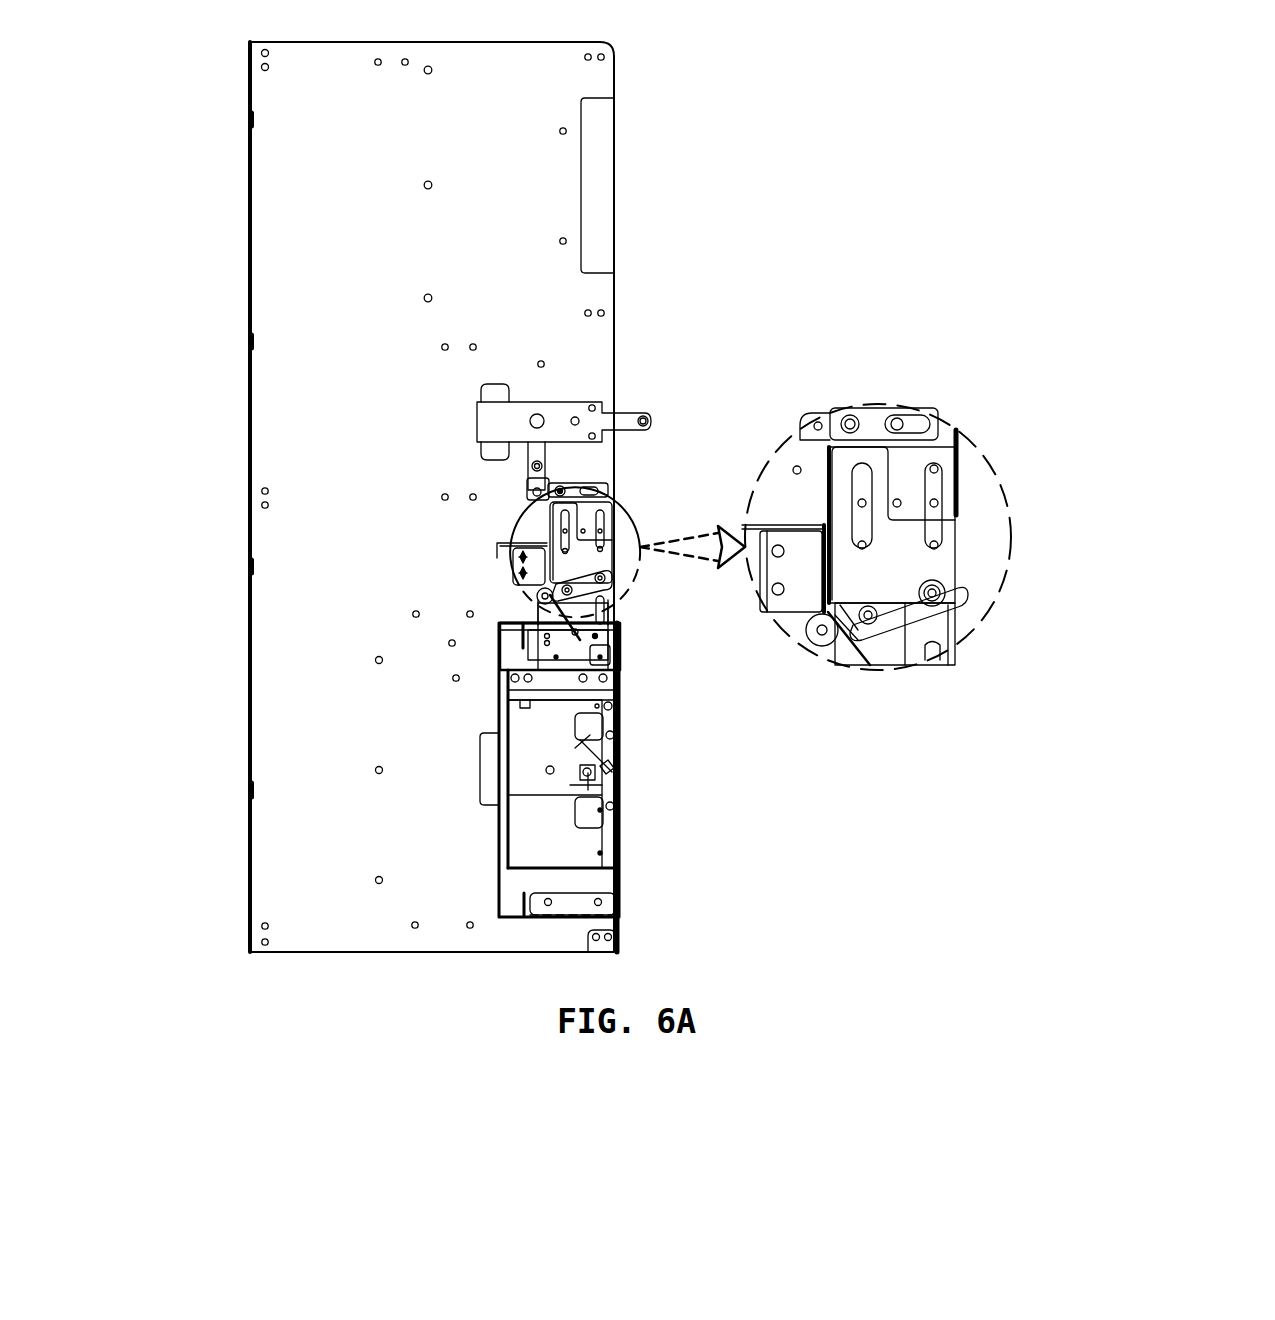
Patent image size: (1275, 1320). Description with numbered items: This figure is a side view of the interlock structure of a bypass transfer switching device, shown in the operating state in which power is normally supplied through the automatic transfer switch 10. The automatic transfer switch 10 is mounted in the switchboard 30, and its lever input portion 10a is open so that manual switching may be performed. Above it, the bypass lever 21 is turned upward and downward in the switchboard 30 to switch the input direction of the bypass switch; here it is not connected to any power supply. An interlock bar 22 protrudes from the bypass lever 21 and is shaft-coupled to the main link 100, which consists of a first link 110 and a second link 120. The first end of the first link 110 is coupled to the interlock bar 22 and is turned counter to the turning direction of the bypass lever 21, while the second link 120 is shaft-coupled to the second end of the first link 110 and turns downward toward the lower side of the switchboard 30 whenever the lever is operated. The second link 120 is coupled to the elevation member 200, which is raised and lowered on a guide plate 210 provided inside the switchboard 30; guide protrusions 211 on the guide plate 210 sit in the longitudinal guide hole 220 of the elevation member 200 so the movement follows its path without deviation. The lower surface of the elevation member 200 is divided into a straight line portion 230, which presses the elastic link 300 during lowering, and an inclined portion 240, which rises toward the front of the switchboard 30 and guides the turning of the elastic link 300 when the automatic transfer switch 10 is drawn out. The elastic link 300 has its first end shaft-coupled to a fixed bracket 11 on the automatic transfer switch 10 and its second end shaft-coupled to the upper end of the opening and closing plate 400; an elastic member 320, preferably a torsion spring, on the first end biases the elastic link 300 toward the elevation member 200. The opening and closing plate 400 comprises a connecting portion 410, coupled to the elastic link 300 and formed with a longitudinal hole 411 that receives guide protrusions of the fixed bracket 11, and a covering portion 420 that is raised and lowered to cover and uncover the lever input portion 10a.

The switchboard 30 is at (265, 249).
The bypass lever 21 is at (557, 407).
The interlock bar 22 is at (535, 448).
The main link 100 is at (771, 445).
The first link 110 is at (543, 477).
The second link 120 is at (567, 488).
The elevation member 200 is at (740, 568).
The guide plate 210 is at (545, 500).
The longitudinal guide hole 220 is at (935, 485).
The guide protrusions 211 is at (938, 505).
The inclined portion 240 is at (950, 565).
The elastic link 300 is at (890, 615).
The straight line portion 230 is at (812, 640).
The elastic member 320 is at (512, 575).
The fixed bracket 11 is at (540, 605).
The opening and closing plate 400 is at (642, 632).
The connecting portion 410 is at (608, 613).
The longitudinal hole 411 is at (600, 628).
The covering portion 420 is at (620, 677).
The automatic transfer switch 10 is at (497, 828).
The lever input portion 10a is at (617, 752).